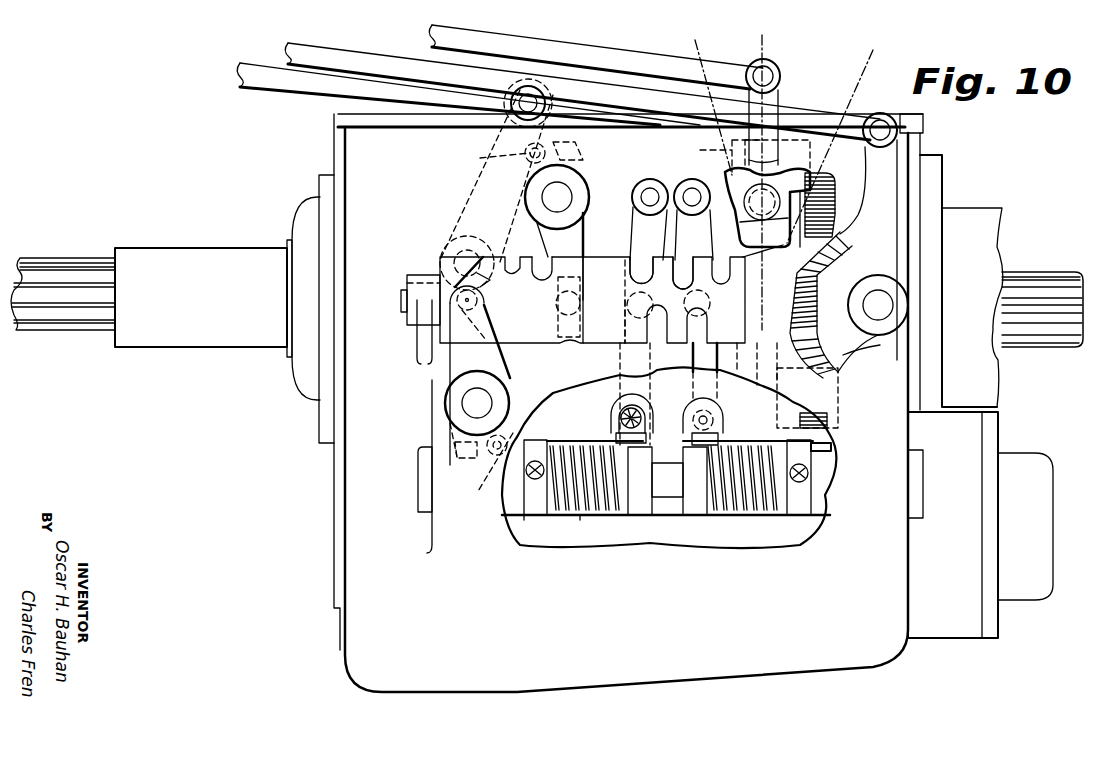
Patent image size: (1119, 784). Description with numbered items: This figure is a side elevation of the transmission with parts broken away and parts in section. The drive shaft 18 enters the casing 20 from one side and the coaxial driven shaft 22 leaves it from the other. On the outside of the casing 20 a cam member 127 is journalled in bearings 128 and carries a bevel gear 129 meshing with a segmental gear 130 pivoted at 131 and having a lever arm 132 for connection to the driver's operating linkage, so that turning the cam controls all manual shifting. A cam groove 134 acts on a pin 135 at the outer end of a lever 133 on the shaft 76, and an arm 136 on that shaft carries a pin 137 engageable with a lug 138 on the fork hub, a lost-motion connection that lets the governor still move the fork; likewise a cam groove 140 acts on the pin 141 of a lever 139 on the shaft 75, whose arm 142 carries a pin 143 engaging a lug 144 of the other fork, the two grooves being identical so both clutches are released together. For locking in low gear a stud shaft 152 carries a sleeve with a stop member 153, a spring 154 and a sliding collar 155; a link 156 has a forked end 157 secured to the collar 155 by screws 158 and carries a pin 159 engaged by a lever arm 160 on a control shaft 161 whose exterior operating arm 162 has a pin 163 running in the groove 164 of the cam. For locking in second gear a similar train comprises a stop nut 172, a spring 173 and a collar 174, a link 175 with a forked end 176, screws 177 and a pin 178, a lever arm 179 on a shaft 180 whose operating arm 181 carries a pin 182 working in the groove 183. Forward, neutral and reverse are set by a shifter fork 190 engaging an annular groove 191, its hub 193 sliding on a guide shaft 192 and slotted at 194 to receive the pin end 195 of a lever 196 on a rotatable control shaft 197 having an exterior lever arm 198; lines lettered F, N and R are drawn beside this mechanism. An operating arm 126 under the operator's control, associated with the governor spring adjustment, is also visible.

The transmission drive shaft 18 is at (85, 320).
The casing 20 is at (357, 535).
The driven shaft 22 is at (1040, 285).
The shaft 75 is at (567, 201).
The crank arm 76 is at (478, 404).
The operating arm 126 is at (462, 211).
The cam member 127 is at (544, 343).
The bearings 128 is at (410, 321).
The bevel gear 129 is at (866, 293).
The segmental gear 130 is at (846, 243).
The pivot 131 is at (880, 337).
The lever arm 132 is at (892, 198).
The lever 133 is at (459, 370).
The cam groove 134 is at (490, 280).
The pin 135 is at (482, 303).
The arm 136 is at (495, 430).
The pin 137 is at (490, 470).
The lug 138 is at (488, 455).
The lever 139 is at (552, 237).
The cam groove 140 is at (553, 251).
The pin 141 is at (560, 308).
The arm 142 is at (528, 160).
The pin 143 is at (501, 121).
The lug 144 is at (573, 160).
The stud shaft 152 is at (669, 495).
The stop member 153 is at (693, 507).
The spring 154 is at (732, 510).
The collar 155 is at (797, 507).
The link 156 is at (738, 442).
The forked end 157 is at (806, 459).
The screws 158 is at (810, 474).
The pin 159 is at (698, 422).
The lever arm 160 is at (700, 388).
The control shaft 161 is at (692, 186).
The operating arm 162 is at (645, 261).
The pin 163 is at (668, 304).
The groove 164 is at (693, 264).
The stop nut 172 is at (644, 520).
The spring 173 is at (595, 513).
The collar 174 is at (535, 505).
The link 175 is at (586, 432).
The forked end 176 is at (536, 440).
The screws 177 is at (527, 478).
The pin 178 is at (620, 414).
The lever arm 179 is at (620, 385).
The shaft 180 is at (650, 188).
The operating arm 181 is at (635, 241).
The pin 182 is at (598, 278).
The groove 183 is at (657, 317).
The shifter fork 190 is at (838, 208).
The annular groove 191 is at (815, 375).
The guide shaft 192 is at (880, 118).
The hub 193 is at (582, 91).
The slot 194 is at (755, 193).
The pin end 195 is at (735, 190).
The lever 196 is at (760, 225).
The control shaft 197 is at (750, 255).
The lever arm 198 is at (778, 96).
The axis F is at (707, 98).
The axis N is at (761, 170).
The axis R is at (834, 137).